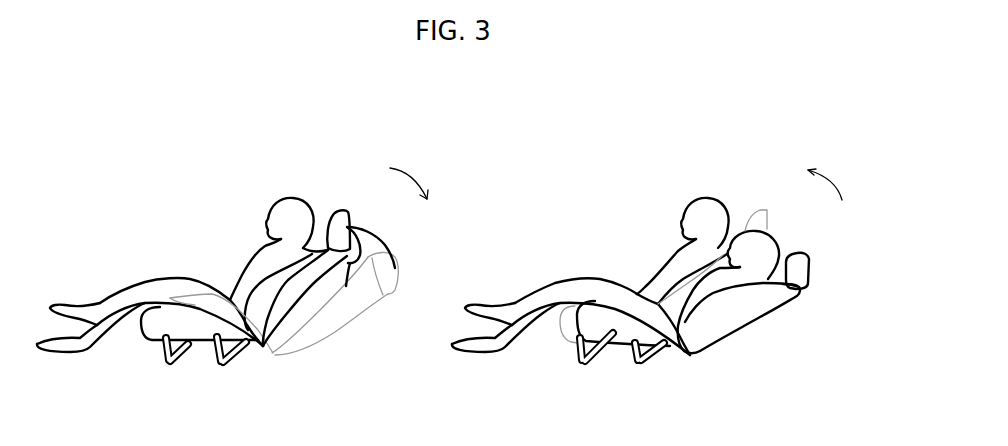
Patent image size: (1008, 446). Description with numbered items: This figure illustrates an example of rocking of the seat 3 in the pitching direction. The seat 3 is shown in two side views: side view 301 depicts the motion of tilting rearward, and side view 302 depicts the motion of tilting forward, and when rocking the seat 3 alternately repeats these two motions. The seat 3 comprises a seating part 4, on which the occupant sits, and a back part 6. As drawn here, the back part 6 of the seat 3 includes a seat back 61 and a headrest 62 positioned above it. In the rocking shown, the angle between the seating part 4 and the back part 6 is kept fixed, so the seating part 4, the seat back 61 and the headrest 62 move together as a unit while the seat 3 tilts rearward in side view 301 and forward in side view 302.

The seat 3 is at (325, 329).
The seating part 4 is at (209, 338).
The back part 6 is at (449, 251).
The seat back 61 is at (386, 291).
The headrest 62 is at (395, 268).
The side view 301 is at (146, 189).
The side view 302 is at (560, 187).